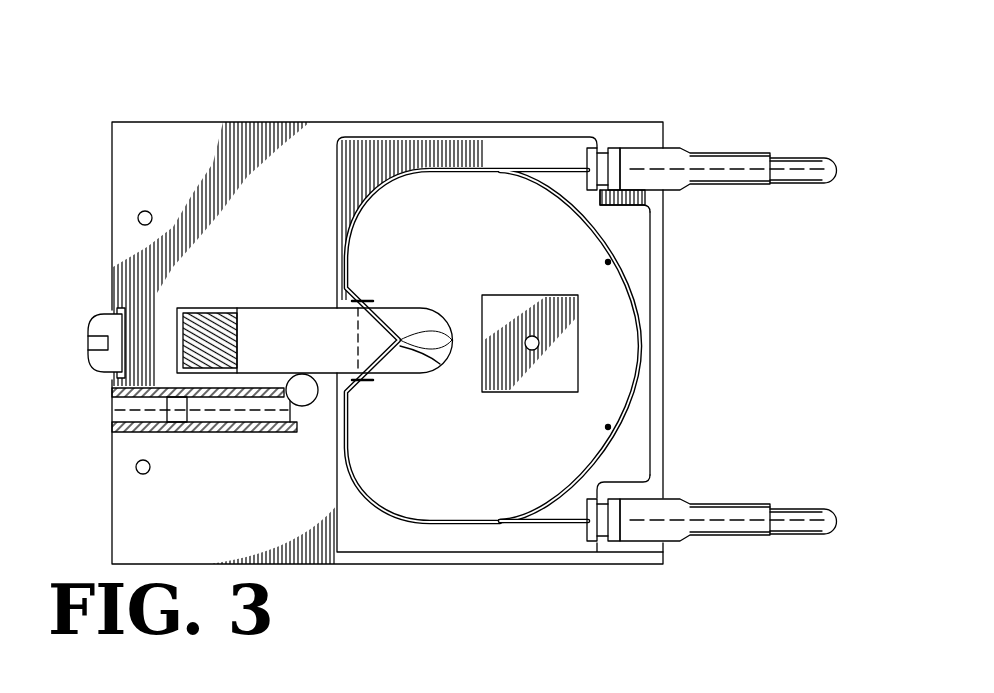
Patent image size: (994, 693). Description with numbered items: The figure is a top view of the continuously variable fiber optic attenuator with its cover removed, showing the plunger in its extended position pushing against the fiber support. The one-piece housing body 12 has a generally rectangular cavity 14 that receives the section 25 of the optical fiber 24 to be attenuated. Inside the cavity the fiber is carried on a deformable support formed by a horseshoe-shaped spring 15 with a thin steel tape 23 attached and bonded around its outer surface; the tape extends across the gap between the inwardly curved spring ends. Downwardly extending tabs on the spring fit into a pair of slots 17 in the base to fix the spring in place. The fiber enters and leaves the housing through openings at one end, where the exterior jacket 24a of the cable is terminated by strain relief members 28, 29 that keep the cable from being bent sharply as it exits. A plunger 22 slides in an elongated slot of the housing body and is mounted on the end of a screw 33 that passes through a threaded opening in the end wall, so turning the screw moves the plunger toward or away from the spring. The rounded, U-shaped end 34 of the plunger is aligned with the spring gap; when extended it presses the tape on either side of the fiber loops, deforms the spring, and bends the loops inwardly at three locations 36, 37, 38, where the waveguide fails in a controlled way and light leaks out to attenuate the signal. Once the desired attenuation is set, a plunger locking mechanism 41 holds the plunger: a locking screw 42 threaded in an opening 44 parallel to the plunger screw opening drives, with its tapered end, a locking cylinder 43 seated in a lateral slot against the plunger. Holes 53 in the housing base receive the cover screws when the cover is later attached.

The housing body 12 is at (186, 128).
The cavity 14 is at (538, 152).
The horseshoe-shaped spring 15 is at (537, 193).
The slots 17 is at (605, 263).
The plunger 22 is at (288, 337).
The thin steel tape 23 is at (440, 364).
The optical fiber 24 is at (543, 526).
The exterior jacket 24a is at (798, 170).
The section of optical fiber 25 is at (636, 260).
The strain relief member 28 is at (738, 530).
The strain relief member 29 is at (735, 163).
The screw 33 is at (215, 313).
The end of plunger 34 is at (352, 325).
The bend location 36 is at (366, 288).
The bend location 37 is at (412, 330).
The bend location 38 is at (367, 395).
The plunger locking mechanism 41 is at (205, 424).
The locking screw 42 is at (240, 408).
The locking cylinder 43 is at (305, 398).
The opening 44 is at (127, 420).
The holes 53 is at (138, 212).